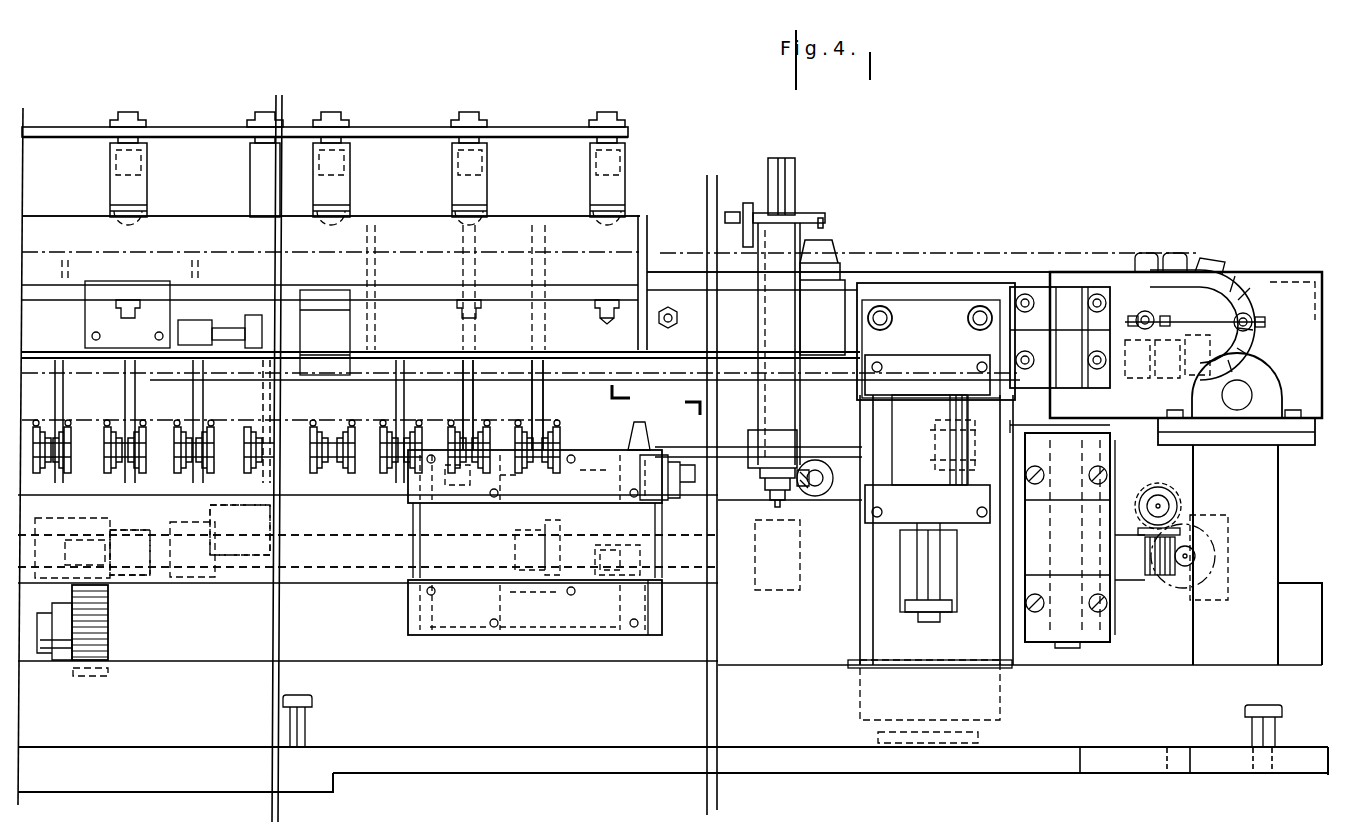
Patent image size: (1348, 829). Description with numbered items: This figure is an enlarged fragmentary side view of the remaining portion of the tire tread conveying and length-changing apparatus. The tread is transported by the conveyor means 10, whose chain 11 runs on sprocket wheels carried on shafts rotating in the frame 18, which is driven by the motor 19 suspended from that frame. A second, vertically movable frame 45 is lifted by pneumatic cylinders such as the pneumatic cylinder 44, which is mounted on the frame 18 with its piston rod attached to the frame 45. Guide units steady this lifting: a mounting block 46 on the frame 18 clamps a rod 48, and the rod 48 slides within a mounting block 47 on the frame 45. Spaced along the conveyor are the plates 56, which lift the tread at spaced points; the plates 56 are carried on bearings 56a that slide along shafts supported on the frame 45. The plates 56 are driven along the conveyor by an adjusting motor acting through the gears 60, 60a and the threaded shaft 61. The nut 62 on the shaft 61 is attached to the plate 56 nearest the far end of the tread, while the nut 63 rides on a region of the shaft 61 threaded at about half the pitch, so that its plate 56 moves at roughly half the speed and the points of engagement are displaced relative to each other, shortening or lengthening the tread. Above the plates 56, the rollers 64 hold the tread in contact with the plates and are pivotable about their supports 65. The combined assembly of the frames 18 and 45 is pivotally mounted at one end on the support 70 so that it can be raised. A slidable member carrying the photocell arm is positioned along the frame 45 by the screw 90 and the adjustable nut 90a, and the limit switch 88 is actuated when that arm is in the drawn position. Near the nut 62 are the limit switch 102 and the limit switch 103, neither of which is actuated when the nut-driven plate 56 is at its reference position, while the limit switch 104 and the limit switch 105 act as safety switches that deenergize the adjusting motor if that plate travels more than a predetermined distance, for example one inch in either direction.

The conveyor means 10 is at (605, 83).
The chain 11 is at (846, 155).
The frame 18 is at (557, 226).
The motor 19 is at (1193, 253).
The pneumatic cylinder 44 is at (968, 414).
The frame 45 is at (745, 594).
The mounting block 46 is at (1108, 394).
The mounting block 47 is at (1115, 482).
The rod 48 is at (1090, 425).
The plates 56 is at (128, 394).
The bearings 56a is at (552, 442).
The gear 60 is at (108, 641).
The gear 60a is at (115, 582).
The threaded shaft 61 is at (368, 576).
The nut 62 is at (550, 542).
The nut 63 is at (220, 530).
The rollers 64 is at (456, 405).
The supports 65 is at (487, 184).
The support 70 is at (1265, 378).
The limit switch 88 is at (828, 246).
The screw 90 is at (1135, 568).
The adjustable nut 90a is at (808, 592).
The limit switch 102 is at (432, 488).
The limit switch 103 is at (650, 456).
The limit switch 104 is at (432, 612).
The limit switch 105 is at (632, 610).